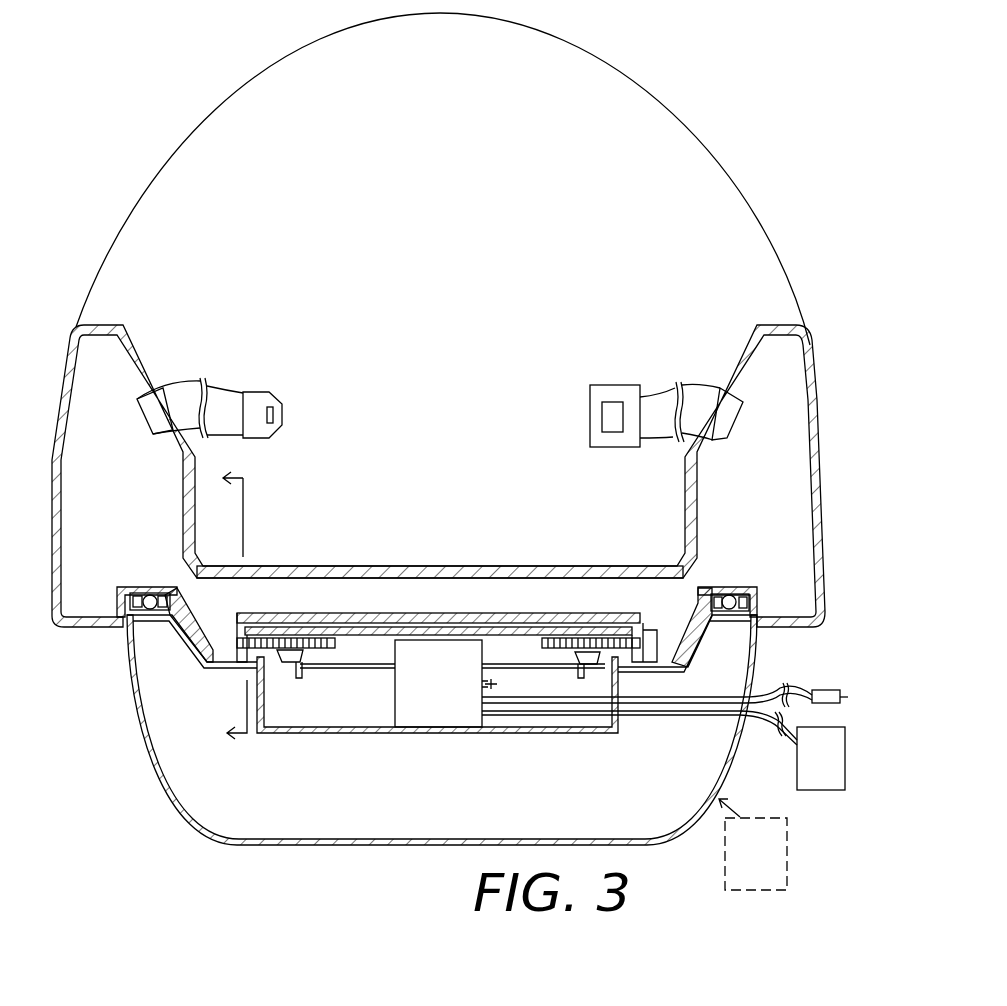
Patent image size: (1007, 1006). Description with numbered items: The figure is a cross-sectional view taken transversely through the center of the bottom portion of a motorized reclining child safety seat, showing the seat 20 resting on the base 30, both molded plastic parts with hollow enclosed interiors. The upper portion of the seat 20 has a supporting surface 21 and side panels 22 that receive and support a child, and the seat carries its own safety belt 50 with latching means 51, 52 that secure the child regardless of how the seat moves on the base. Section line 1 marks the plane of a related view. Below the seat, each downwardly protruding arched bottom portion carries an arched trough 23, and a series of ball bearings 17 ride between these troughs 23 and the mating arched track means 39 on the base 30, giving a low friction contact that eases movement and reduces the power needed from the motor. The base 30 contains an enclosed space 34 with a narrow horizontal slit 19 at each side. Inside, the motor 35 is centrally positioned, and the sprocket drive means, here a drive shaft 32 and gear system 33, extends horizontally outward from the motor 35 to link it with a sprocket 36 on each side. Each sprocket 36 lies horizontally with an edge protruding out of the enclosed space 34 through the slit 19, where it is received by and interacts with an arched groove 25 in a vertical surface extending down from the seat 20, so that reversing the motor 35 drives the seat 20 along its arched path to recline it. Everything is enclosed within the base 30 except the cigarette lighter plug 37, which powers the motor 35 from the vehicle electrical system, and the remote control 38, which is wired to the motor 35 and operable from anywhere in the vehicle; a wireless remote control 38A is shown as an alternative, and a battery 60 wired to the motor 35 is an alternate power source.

The section line 1- 1 is at (225, 603).
The ball bearings 17 is at (132, 603).
The horizontal slit 19 is at (283, 643).
The seat 20 is at (651, 99).
The supporting surface 21 is at (455, 576).
The side panels 22 is at (152, 395).
The arched trough 23 is at (168, 582).
The arched groove 25 is at (213, 630).
The base 30 is at (158, 790).
The drive shaft 32 is at (325, 670).
The gear system 33 is at (293, 654).
The enclosed space 34 is at (598, 720).
The motor 35 is at (452, 733).
The sprocket 36 is at (340, 640).
The cigarette lighter plug 37 is at (837, 688).
The remote control 38 is at (798, 752).
The remote control 38A is at (787, 837).
The arched track means 39 is at (150, 617).
The safety belt 50 is at (213, 380).
The latching means 51 is at (280, 394).
The latching means 52 is at (588, 408).
The battery 60 is at (493, 688).